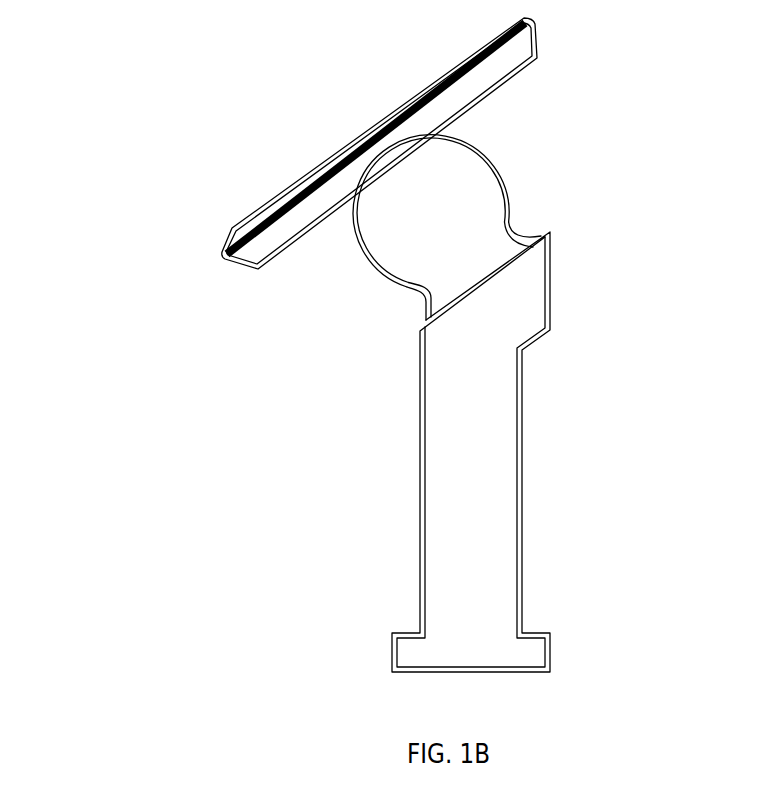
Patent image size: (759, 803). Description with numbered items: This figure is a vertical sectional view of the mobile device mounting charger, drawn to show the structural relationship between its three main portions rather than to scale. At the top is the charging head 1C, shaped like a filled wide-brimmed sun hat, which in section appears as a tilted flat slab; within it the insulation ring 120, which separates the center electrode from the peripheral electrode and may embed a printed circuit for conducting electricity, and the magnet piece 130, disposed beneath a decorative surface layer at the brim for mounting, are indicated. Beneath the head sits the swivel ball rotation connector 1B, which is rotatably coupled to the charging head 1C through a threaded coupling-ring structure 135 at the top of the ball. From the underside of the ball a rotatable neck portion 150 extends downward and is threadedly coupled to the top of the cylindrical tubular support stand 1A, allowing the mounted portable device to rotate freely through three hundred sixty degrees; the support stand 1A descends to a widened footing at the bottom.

The cylindrical tubular support body 1A is at (498, 452).
The rotation ball connector 1B is at (488, 178).
The charging head 1C is at (518, 47).
The insulation ring 120 is at (267, 203).
The magnet piece 130 is at (228, 232).
The threaded coupling-ring structure 135 is at (420, 133).
The rotatable neck portion 150 is at (430, 318).